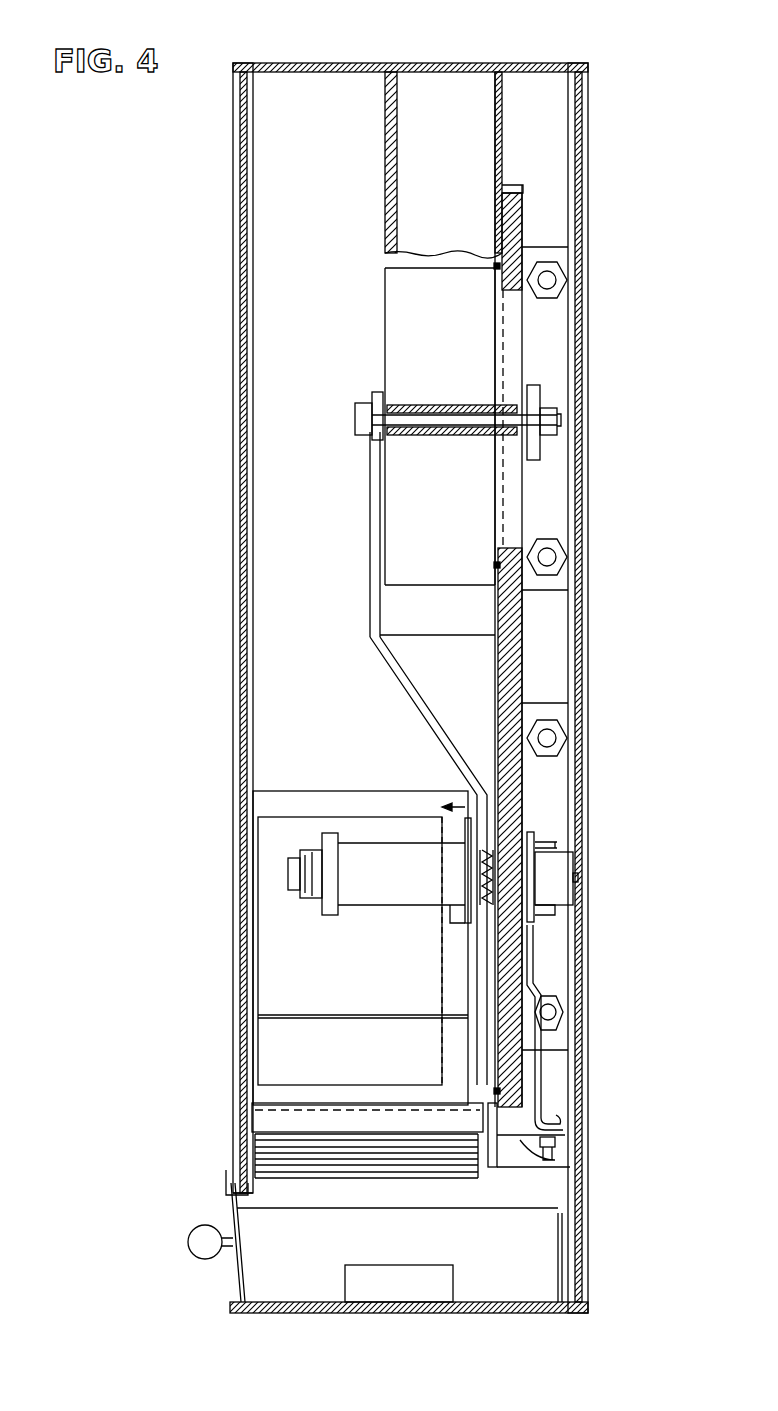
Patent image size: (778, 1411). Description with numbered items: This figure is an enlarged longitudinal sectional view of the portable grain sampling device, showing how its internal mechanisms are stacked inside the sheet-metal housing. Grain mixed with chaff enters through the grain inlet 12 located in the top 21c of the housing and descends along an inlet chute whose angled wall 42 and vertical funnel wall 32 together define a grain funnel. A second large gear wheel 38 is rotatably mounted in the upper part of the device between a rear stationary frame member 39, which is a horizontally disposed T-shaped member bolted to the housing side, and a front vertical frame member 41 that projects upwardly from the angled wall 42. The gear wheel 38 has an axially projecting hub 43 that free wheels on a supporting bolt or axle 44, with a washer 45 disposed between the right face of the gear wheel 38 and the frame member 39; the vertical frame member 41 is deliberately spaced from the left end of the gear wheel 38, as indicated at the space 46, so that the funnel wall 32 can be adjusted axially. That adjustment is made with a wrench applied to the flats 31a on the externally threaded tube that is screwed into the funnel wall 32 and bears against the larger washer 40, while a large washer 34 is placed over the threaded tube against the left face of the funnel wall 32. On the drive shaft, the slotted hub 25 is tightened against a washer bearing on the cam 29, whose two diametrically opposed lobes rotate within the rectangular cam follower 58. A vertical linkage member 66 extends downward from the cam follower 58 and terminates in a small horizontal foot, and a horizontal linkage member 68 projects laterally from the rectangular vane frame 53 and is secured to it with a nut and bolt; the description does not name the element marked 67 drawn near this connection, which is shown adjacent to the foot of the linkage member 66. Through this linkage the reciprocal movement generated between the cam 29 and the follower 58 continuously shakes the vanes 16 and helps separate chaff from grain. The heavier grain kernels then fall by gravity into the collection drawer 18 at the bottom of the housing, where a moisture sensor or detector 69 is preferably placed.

The grain inlet 12 is at (435, 90).
The top 21c is at (540, 70).
The second large gear wheel 38 is at (515, 330).
The washer 45 is at (527, 378).
The rear stationary frame member 39 is at (532, 397).
The space 46 is at (378, 395).
The supporting bolt or axle 44 is at (428, 437).
The axially projecting hub 43 is at (462, 430).
The front vertical frame member 41 is at (370, 537).
The angled wall 42 is at (413, 707).
The vertical funnel wall 32 is at (467, 793).
The larger washer 40 is at (490, 840).
The flats 31a is at (314, 850).
The large washer 34 is at (462, 920).
The rectangular cam follower 58 is at (525, 825).
The cam 29 is at (545, 850).
The slotted hub 25 is at (575, 893).
The vertical linkage member 66 is at (537, 985).
The rectangular vane frame 53 is at (265, 1112).
The vanes 16 is at (430, 1160).
The frame member 67 is at (563, 1130).
The horizontal linkage member 68 is at (555, 1158).
The collection drawer 18 is at (540, 1248).
The moisture sensor or detector 69 is at (420, 1292).